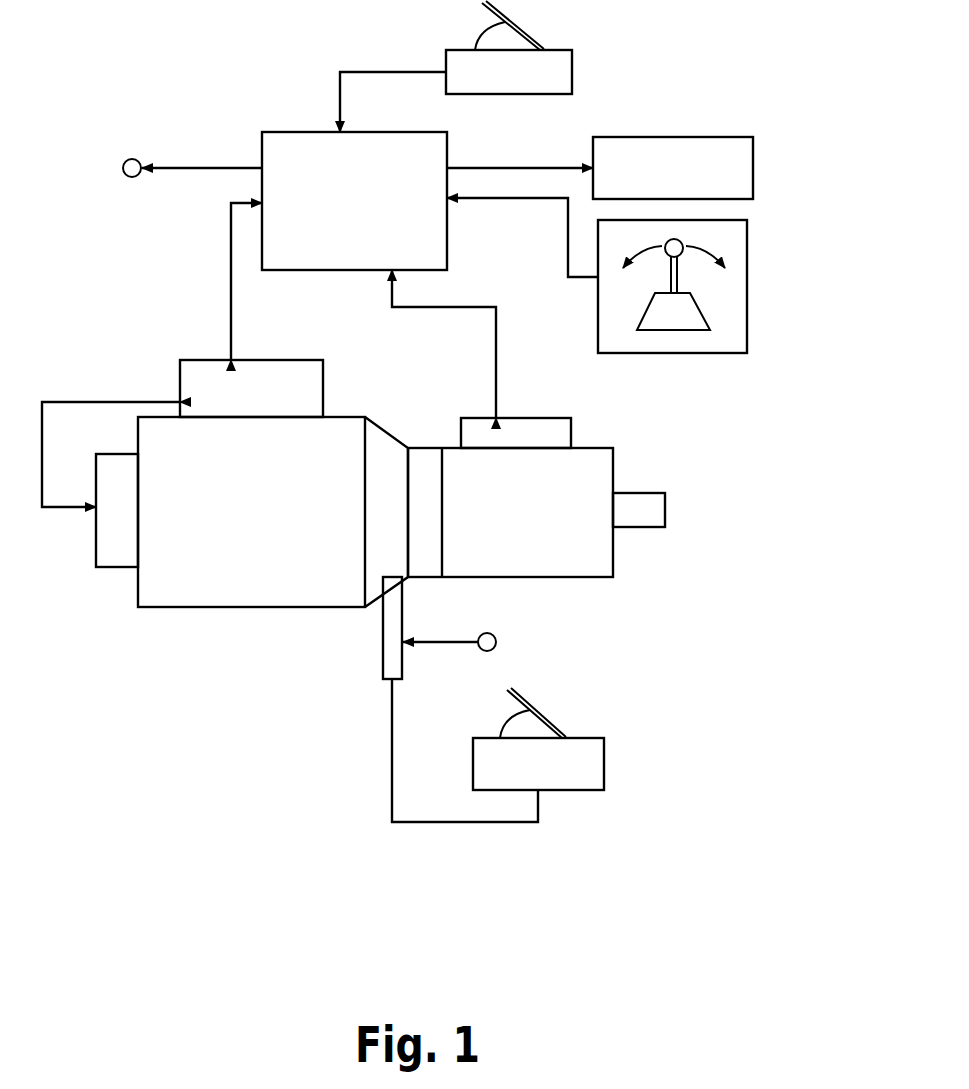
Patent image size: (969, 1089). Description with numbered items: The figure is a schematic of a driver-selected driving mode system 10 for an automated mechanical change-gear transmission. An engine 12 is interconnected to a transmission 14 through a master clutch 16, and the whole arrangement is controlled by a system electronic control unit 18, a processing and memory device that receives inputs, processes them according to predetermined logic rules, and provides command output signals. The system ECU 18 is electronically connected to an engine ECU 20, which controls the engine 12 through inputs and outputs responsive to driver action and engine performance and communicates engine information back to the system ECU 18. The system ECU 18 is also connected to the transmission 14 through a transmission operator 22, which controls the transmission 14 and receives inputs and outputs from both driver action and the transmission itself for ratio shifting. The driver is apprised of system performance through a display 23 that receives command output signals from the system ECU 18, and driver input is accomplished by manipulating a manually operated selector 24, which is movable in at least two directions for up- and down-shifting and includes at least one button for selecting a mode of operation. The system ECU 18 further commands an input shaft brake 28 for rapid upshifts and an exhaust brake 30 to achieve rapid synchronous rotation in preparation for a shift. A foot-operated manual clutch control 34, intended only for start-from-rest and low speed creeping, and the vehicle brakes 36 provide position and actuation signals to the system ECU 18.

The driving mode system 10 is at (800, 210).
The engine 12 is at (177, 578).
The transmission 14 is at (583, 560).
The master clutch 16 is at (388, 447).
The system electronic control unit 18 is at (283, 143).
The engine ECU 20 is at (202, 370).
The transmission operator 22 is at (473, 427).
The display 23 is at (687, 140).
The manually operated selector 24 is at (730, 280).
The input shaft brake 28 is at (425, 560).
The exhaust brake 30 is at (120, 538).
The manual clutch control 34 is at (585, 772).
The vehicle brakes 36 is at (558, 65).